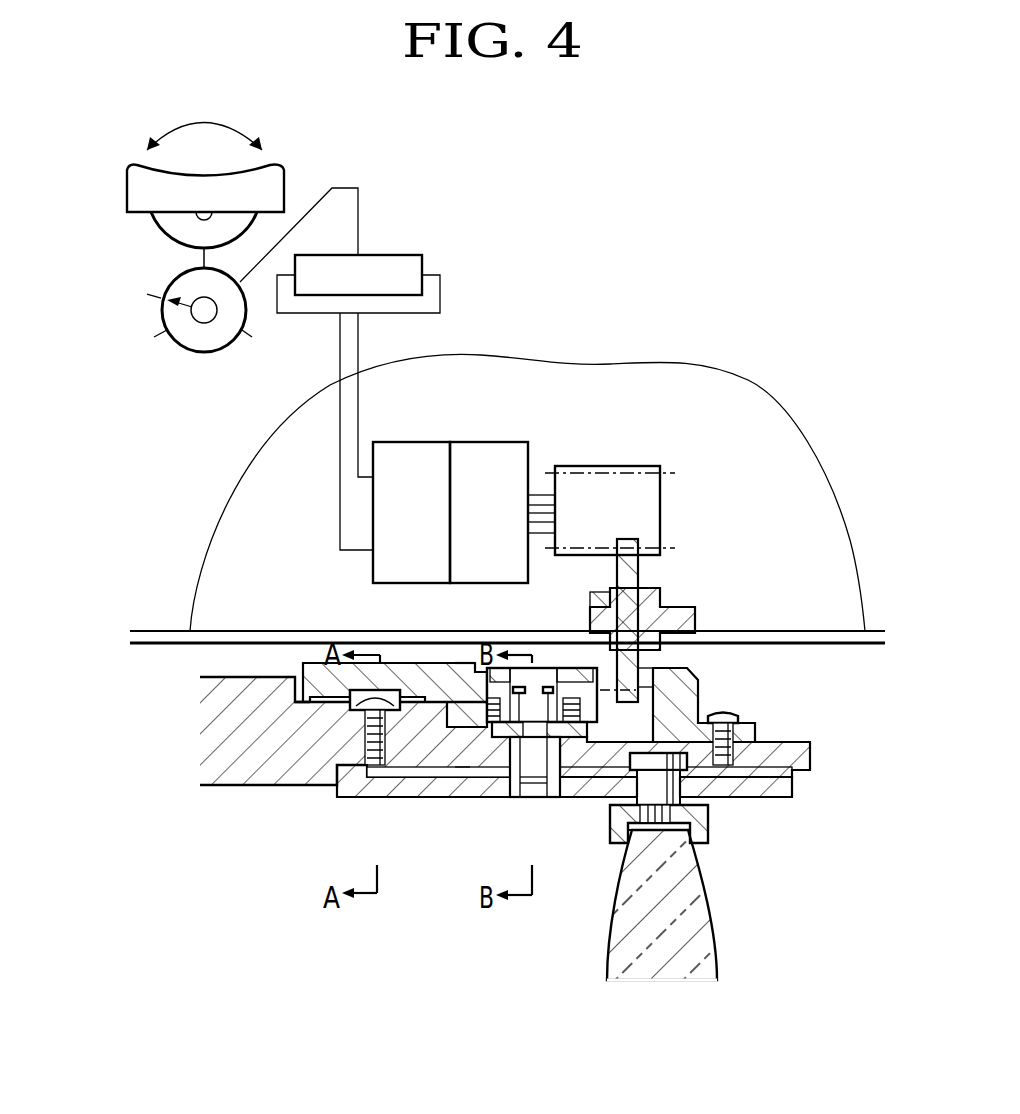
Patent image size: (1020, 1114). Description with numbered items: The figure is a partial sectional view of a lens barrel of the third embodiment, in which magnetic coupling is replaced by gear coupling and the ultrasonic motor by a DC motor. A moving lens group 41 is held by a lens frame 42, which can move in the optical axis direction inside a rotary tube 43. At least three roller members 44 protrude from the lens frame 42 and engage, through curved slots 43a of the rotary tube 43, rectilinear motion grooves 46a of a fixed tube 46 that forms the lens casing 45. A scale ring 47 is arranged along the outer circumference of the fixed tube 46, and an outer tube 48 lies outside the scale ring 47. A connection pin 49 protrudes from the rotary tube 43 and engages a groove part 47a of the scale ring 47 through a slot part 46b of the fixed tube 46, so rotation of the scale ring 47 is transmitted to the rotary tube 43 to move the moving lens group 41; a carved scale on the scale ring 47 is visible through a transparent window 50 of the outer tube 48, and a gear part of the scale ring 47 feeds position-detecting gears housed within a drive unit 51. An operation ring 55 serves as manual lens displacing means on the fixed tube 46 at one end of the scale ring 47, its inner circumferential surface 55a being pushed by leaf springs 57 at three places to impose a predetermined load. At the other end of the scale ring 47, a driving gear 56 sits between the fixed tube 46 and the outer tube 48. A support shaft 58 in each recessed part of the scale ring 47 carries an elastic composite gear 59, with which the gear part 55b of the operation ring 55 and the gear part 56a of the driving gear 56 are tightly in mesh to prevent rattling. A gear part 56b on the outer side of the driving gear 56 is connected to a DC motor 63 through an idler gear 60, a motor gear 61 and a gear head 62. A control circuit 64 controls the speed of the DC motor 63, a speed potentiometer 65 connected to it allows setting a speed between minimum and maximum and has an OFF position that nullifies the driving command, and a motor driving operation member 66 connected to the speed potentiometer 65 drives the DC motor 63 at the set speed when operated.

The moving lens group 41 is at (663, 960).
The lens frame 42 is at (707, 833).
The rotary tube 43 is at (350, 787).
The curved slot 43a is at (677, 783).
The roller member 44 is at (690, 812).
The lens casing 45 is at (244, 667).
The fixed tube 46 is at (268, 773).
The rectilinear motion groove 46a is at (598, 778).
The slot part 46b is at (500, 778).
The scale ring 47 is at (447, 773).
The groove part 47a is at (460, 778).
The outer tube 48 is at (700, 712).
The connection pin 49 is at (513, 752).
The transparent window 50 is at (550, 668).
The drive unit 51 is at (188, 519).
The operation ring 55 is at (290, 688).
The inner circumferential surface 55a is at (350, 710).
The gear part 55b is at (470, 668).
The driving gear 56 is at (790, 785).
The gear part 56a is at (606, 612).
The gear part 56b is at (698, 690).
The leaf spring 57 is at (393, 718).
The support shaft 58 is at (545, 687).
The composite gear 59 is at (546, 762).
The idler gear 60 is at (633, 570).
The motor gear 61 is at (630, 492).
The gear head 62 is at (510, 457).
The DC motor 63 is at (428, 457).
The control circuit 64 is at (388, 263).
The speed potentiometer 65 is at (204, 352).
The motor driving operation member 66 is at (270, 183).